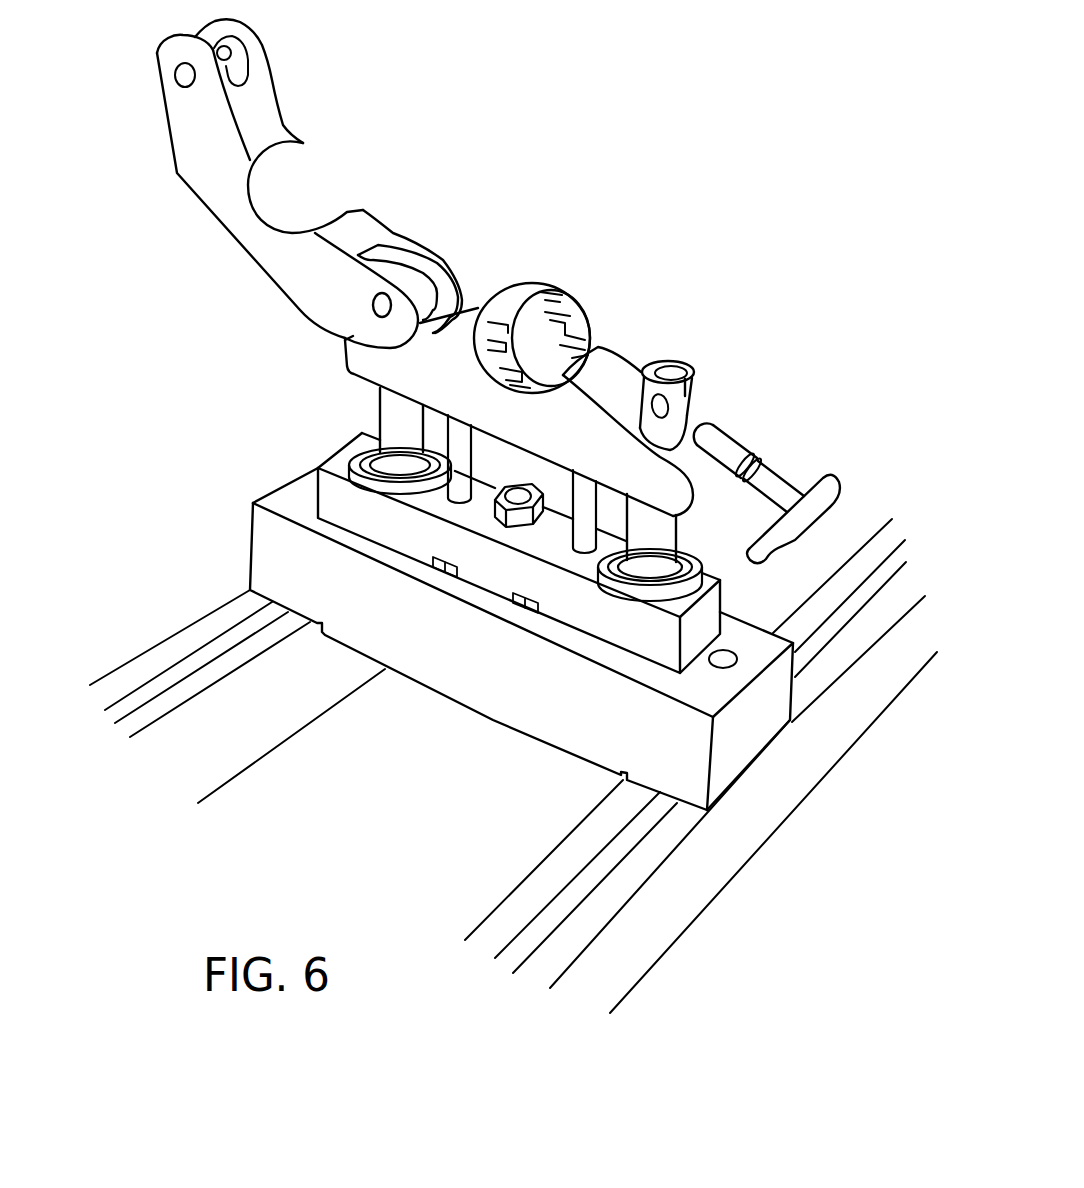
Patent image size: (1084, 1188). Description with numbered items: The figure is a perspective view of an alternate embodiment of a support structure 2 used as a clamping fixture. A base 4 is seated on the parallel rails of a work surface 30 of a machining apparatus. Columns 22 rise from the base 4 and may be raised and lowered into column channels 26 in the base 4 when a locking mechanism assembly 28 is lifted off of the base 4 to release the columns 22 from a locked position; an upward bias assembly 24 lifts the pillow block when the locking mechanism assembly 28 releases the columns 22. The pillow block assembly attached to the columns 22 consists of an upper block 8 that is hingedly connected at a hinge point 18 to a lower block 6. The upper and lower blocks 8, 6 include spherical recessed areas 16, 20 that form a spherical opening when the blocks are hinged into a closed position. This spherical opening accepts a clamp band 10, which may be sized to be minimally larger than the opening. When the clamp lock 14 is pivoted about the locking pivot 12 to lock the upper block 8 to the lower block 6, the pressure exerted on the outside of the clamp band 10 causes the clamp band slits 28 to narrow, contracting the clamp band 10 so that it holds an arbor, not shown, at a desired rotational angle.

The support structure 2 is at (456, 154).
The base 4 is at (277, 488).
The lower block 6 is at (610, 360).
The upper block 8 is at (217, 202).
The clamp band 10 is at (537, 283).
The locking pivot 12 is at (668, 404).
The clamp lock 14 is at (833, 477).
The spherical recessed area 16 is at (297, 197).
The hinge point 18 is at (373, 303).
The spherical recessed area 20 is at (477, 360).
The columns 22 is at (380, 408).
The upward bias assembly 24 is at (583, 497).
The column channels 26 is at (360, 447).
The locking mechanism assembly 28 is at (725, 595).
The work surface 30 is at (240, 609).